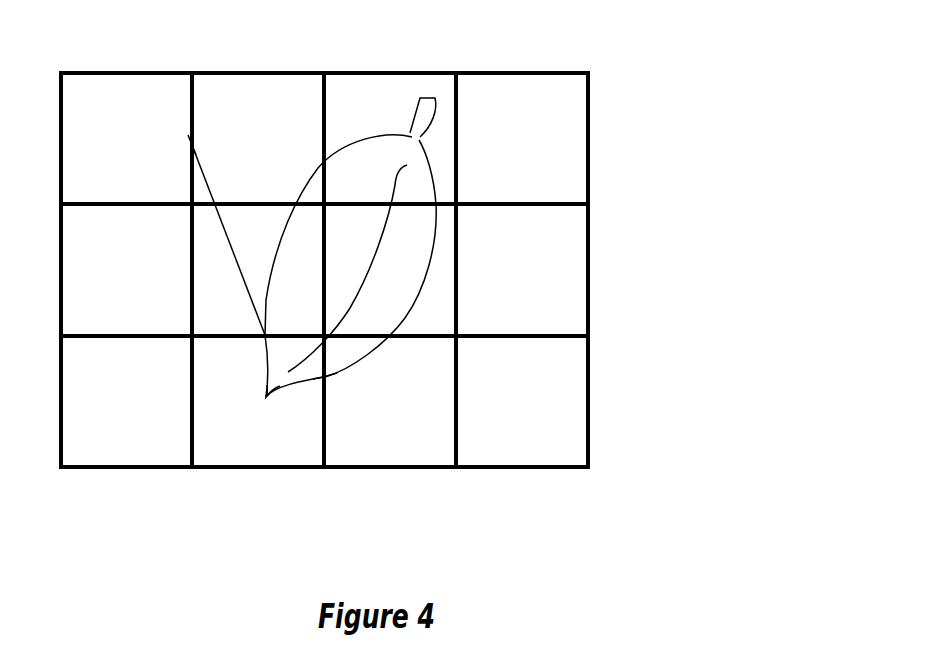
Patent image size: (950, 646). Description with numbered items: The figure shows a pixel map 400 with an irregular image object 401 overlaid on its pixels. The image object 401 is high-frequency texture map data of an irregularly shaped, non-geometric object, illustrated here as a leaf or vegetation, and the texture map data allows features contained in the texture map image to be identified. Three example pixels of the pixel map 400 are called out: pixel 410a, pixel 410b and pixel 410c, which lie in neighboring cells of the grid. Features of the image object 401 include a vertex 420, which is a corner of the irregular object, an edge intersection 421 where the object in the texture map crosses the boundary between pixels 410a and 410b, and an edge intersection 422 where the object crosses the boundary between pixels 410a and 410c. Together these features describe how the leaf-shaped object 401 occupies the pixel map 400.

The pixel map 400 is at (632, 254).
The image object 401 is at (444, 306).
The pixel 410a is at (212, 428).
The pixel 410b is at (276, 210).
The pixel 410c is at (356, 458).
The vertex 420 is at (262, 402).
The edge intersection 421 is at (192, 145).
The edge intersection 422 is at (325, 377).